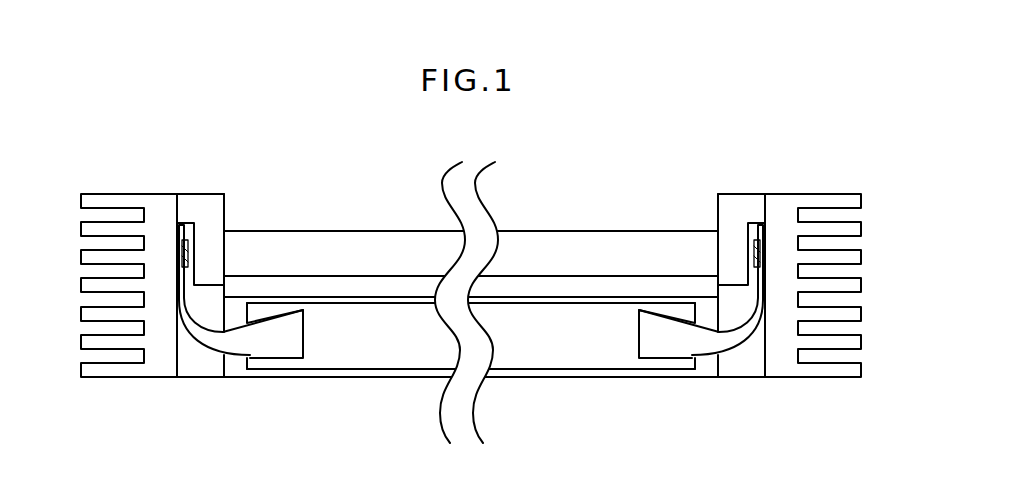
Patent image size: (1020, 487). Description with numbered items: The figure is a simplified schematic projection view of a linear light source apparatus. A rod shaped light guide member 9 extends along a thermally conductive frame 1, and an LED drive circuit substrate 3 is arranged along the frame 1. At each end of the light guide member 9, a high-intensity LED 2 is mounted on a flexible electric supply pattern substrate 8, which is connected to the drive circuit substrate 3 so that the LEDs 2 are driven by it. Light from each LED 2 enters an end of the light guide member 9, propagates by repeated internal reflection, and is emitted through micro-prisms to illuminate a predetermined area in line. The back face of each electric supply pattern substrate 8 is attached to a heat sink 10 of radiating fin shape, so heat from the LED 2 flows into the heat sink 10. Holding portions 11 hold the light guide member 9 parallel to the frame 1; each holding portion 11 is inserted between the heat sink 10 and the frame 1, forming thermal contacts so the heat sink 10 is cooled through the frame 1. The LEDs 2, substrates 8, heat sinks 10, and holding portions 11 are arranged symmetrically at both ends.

The thermally conductive frame 1 is at (427, 372).
The LED 2 is at (188, 245).
The LED drive circuit substrate 3 is at (358, 357).
The electric supply pattern substrate 8 is at (275, 345).
The light guide member 9 is at (340, 246).
The heat sink 10 is at (158, 377).
The holding portion 11 is at (205, 192).